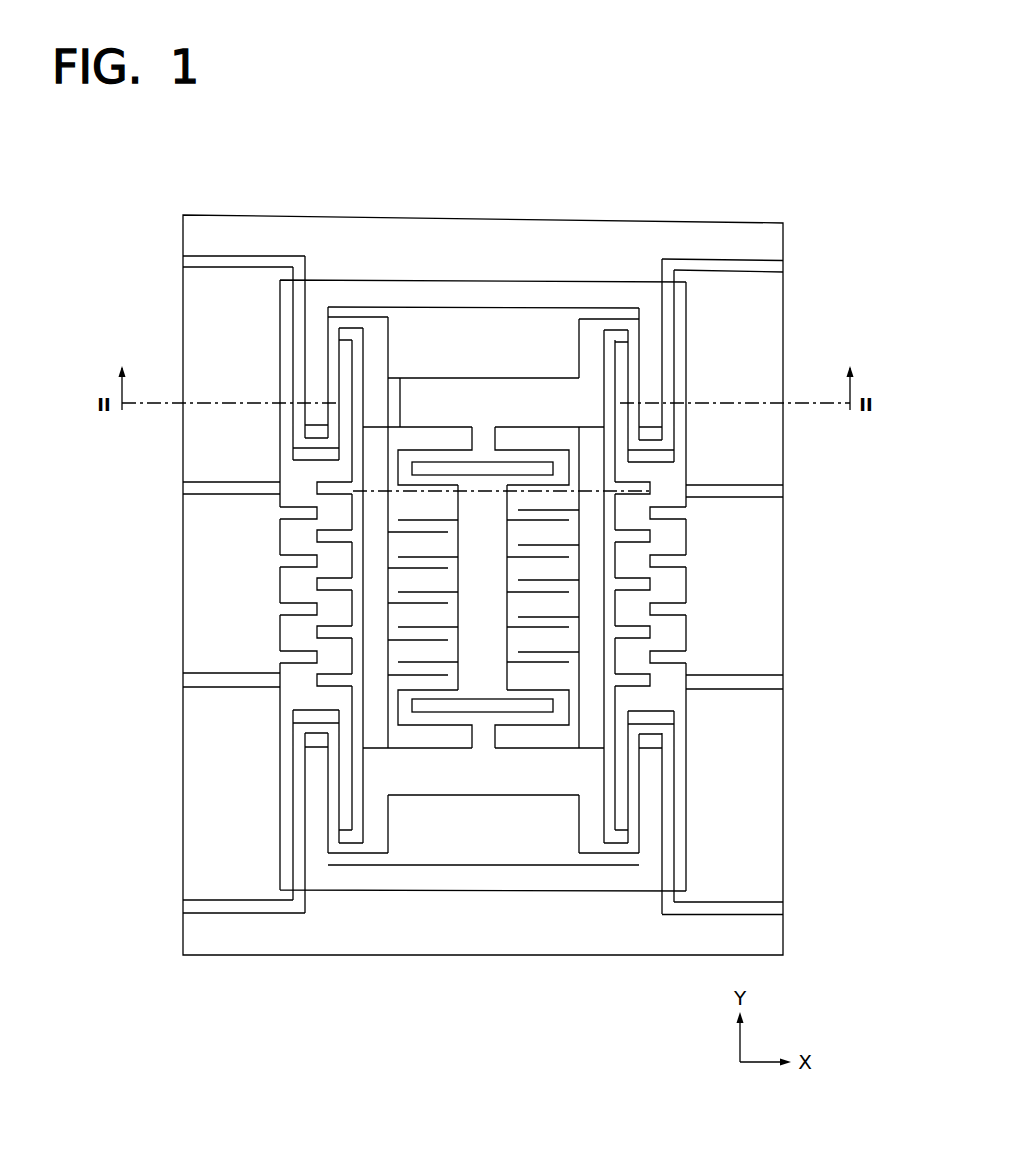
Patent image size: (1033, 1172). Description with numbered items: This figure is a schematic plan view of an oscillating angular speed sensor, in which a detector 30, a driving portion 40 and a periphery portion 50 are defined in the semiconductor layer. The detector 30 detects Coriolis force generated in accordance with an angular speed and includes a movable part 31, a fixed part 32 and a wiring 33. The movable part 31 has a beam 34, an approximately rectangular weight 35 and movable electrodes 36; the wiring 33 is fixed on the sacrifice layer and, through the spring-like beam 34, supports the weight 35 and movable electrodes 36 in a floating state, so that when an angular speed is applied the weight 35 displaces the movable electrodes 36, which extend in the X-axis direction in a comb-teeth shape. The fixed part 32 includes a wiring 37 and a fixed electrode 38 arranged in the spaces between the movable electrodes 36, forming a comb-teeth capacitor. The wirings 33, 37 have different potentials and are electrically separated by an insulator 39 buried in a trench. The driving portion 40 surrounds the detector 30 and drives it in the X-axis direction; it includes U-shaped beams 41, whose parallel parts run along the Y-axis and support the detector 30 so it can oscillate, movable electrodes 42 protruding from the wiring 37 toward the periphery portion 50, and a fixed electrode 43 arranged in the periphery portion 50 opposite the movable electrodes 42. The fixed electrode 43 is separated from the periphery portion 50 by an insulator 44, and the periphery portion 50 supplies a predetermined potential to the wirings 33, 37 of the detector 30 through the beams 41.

The detector 30 is at (512, 737).
The movable part 31 is at (475, 527).
The fixed part 32 is at (373, 637).
The wiring 33 is at (430, 397).
The beam 34 is at (540, 447).
The weight 35 is at (490, 550).
The movable electrode 36 is at (427, 557).
The wiring 37 is at (377, 603).
The fixed electrode 38 is at (300, 582).
The insulator 39 is at (393, 400).
The driving portion 40 is at (320, 588).
The beam 41 is at (320, 463).
The movable electrode 42 is at (395, 578).
The fixed electrode 43 is at (203, 632).
The insulator 44 is at (295, 495).
The periphery portion 50 is at (195, 432).